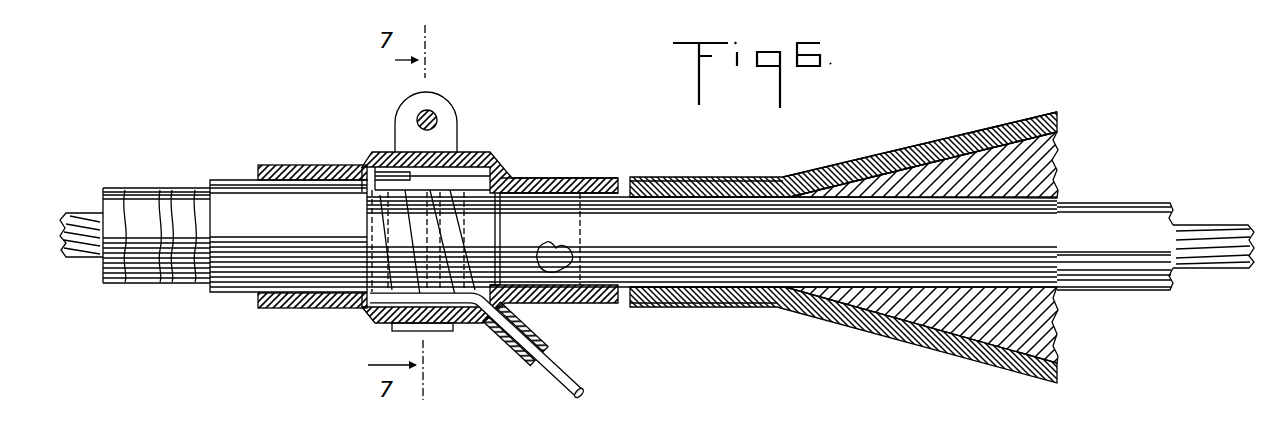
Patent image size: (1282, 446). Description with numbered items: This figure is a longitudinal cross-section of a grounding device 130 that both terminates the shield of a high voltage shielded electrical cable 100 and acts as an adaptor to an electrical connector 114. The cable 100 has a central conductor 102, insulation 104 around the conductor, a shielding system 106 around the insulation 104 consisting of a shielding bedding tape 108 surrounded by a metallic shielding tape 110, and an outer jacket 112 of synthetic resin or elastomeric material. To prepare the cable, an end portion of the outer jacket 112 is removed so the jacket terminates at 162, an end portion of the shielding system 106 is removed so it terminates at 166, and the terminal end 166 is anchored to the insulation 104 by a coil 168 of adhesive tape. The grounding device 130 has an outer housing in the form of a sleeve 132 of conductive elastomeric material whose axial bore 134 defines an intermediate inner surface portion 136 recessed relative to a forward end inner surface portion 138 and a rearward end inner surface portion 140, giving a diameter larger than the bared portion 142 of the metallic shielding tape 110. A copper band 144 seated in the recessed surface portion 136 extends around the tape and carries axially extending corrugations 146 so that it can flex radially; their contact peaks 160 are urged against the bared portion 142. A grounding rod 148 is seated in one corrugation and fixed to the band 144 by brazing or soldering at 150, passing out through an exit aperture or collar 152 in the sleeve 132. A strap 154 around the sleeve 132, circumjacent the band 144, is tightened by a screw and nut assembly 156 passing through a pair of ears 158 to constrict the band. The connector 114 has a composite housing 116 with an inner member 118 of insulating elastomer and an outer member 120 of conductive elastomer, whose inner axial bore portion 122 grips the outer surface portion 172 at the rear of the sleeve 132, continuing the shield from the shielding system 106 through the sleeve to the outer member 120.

The high voltage shielded electrical cable 100 is at (214, 299).
The central conductor 102 is at (68, 250).
The insulation 104 is at (117, 207).
The shielding system 106 is at (173, 183).
The shielding bedding tape 108 is at (138, 203).
The metallic shielding tape 110 is at (196, 200).
The outer jacket 112 is at (231, 185).
The electrical connector 114 is at (873, 153).
The composite housing 116 is at (945, 346).
The inner member 118 is at (1035, 162).
The outer member 120 is at (976, 128).
The inner axial bore portion 122 is at (713, 197).
The grounding device 130 is at (477, 207).
The sleeve 132 is at (372, 153).
The axial bore 134 is at (390, 172).
The intermediate inner surface portion 136 is at (433, 191).
The forward end inner surface portion 138 is at (282, 191).
The rearward end inner surface portion 140 is at (676, 197).
The bared portion 142 is at (375, 247).
The band 144 is at (492, 166).
The corrugations 146 is at (505, 173).
The grounding rod 148 is at (483, 330).
The brazing or soldering 150 is at (440, 196).
The exit aperture or collar 152 is at (543, 330).
The strap 154 is at (410, 328).
The screw and nut assembly 156 is at (438, 118).
The ears 158 is at (428, 93).
The contact peaks 160 is at (464, 191).
The terminal end of the outer jacket 162 is at (372, 222).
The terminal end of the shielding system 166 is at (562, 257).
The coil of adhesive tape 168 is at (576, 216).
The outer surface portion 172 is at (672, 186).